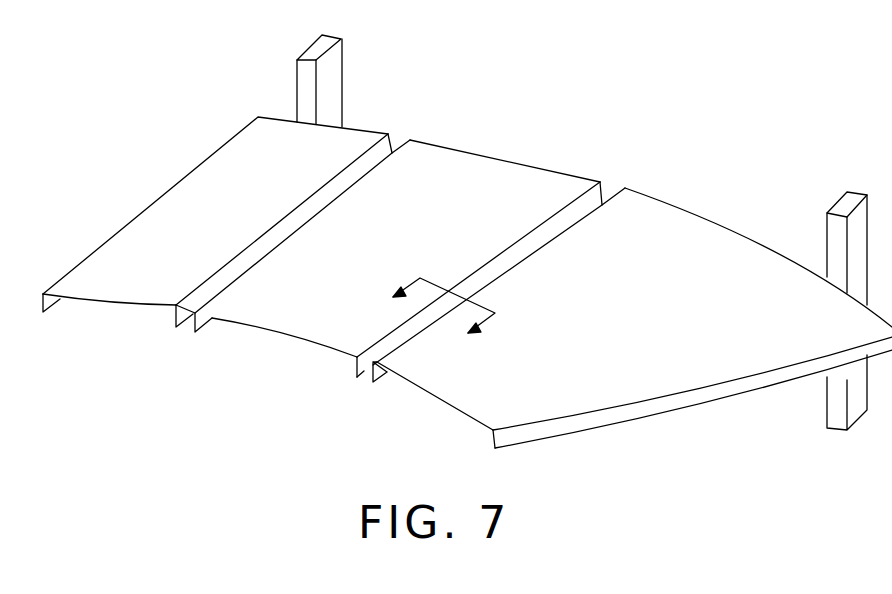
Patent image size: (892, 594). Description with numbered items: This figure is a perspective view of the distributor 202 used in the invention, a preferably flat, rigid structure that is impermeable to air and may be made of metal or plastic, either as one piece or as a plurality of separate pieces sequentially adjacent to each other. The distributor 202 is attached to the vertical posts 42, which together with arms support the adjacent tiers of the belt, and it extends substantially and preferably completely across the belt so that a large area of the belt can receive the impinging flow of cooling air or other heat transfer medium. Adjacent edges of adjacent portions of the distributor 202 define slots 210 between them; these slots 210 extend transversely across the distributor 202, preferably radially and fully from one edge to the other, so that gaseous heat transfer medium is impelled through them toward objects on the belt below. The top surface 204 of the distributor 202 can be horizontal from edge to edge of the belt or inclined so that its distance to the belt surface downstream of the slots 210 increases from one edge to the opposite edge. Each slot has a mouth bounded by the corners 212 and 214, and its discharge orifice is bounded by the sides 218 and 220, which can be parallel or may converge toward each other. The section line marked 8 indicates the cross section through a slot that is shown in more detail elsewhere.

The vertical post 42 is at (335, 82).
The distributor 202 is at (244, 215).
The top surface 204 is at (693, 227).
The slots 210 is at (401, 138).
The corner 212 is at (387, 362).
The corner 214 is at (357, 350).
The side 218 is at (379, 376).
The side 220 is at (352, 368).
The section line 8-8' 8 is at (450, 297).